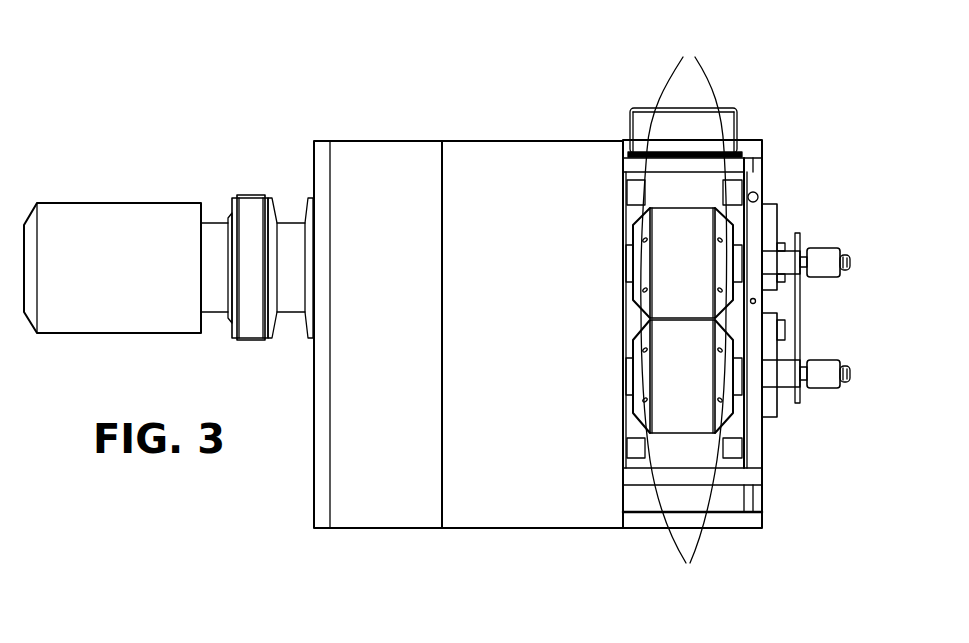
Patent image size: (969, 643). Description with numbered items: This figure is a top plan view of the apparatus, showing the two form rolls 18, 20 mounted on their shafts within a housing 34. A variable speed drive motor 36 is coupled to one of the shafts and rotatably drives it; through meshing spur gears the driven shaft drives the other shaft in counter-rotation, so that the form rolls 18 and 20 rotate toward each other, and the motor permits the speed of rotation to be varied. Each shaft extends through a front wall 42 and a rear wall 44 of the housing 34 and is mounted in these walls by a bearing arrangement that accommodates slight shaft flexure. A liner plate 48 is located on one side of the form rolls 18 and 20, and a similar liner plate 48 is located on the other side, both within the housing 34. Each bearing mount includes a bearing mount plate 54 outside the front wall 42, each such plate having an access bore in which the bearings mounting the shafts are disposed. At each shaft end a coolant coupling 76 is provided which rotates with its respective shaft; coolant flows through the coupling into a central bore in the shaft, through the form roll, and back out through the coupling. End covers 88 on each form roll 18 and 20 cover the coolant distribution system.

The form roll 18 is at (678, 433).
The form roll 20 is at (684, 208).
The housing 34 is at (523, 141).
The variable speed drive motor 36 is at (112, 203).
The front wall 42 is at (763, 455).
The rear wall 44 is at (623, 333).
The liner plate 48 is at (629, 426).
The bearing mount plate 54 is at (778, 212).
The coolant coupling 76 is at (821, 248).
The end covers 88 is at (684, 310).